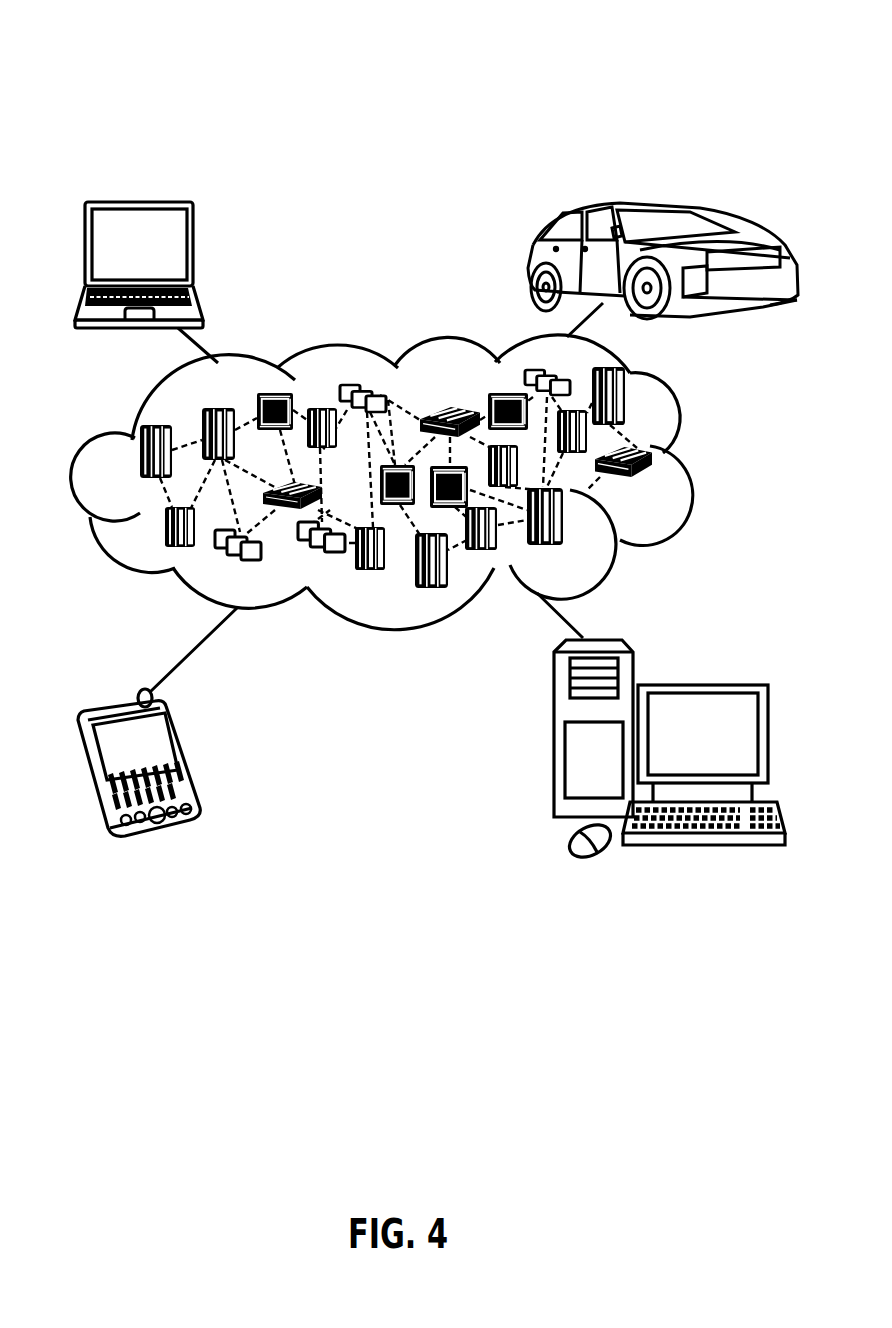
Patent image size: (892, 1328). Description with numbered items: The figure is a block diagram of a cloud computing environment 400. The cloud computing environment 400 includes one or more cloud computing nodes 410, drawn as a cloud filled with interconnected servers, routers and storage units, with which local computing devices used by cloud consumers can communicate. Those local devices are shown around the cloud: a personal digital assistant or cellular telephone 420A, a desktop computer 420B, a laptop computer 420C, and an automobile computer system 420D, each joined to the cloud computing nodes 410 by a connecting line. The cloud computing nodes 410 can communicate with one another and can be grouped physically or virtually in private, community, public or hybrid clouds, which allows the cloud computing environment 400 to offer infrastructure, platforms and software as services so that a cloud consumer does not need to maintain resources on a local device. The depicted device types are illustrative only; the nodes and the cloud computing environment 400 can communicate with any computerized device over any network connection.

The cloud computing environment 400 is at (328, 50).
The cloud computing nodes 410 is at (655, 483).
The mobile device 420A is at (186, 756).
The desktop computer 420B is at (700, 683).
The laptop computer 420C is at (193, 250).
The vehicle 420D is at (531, 262).